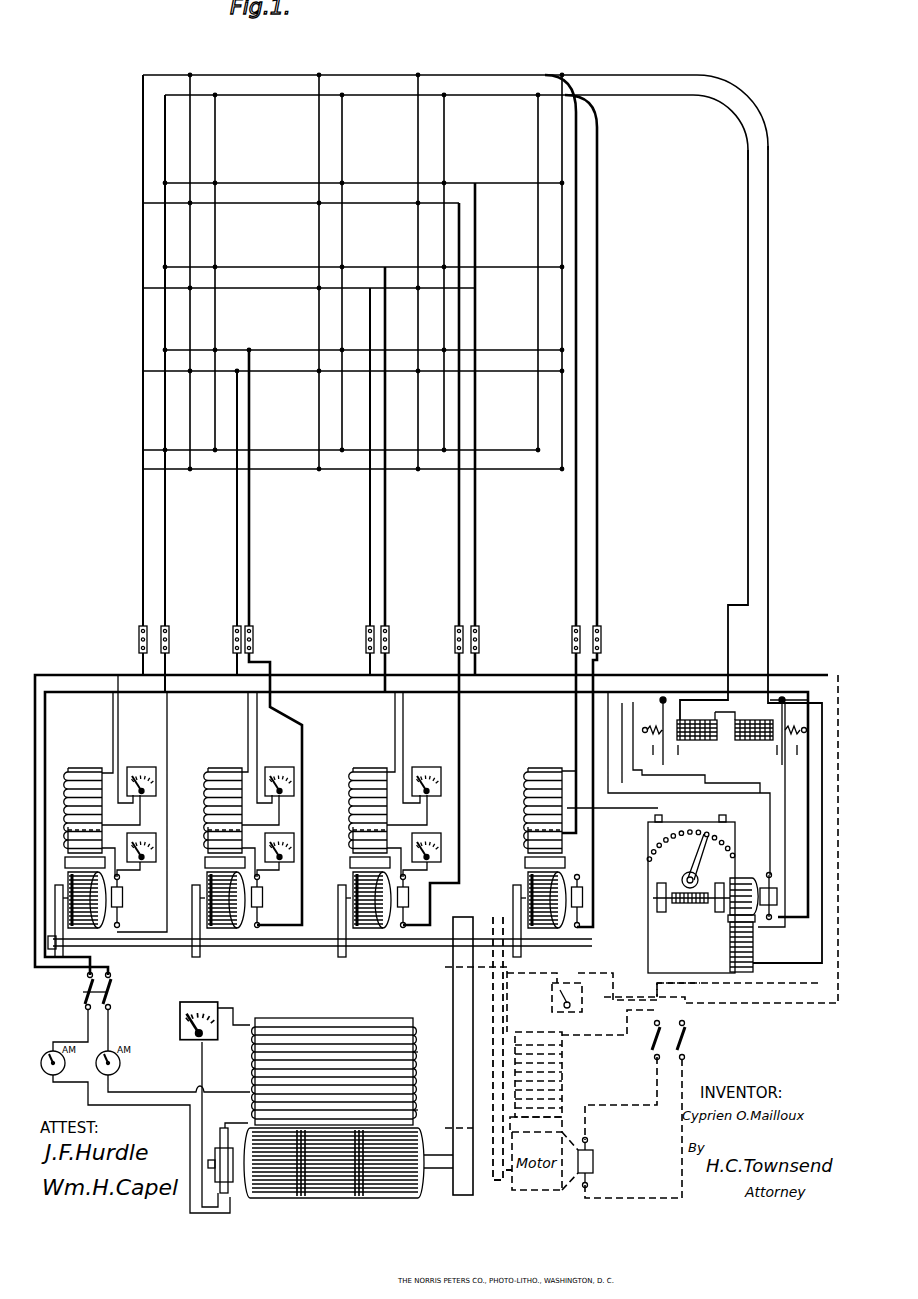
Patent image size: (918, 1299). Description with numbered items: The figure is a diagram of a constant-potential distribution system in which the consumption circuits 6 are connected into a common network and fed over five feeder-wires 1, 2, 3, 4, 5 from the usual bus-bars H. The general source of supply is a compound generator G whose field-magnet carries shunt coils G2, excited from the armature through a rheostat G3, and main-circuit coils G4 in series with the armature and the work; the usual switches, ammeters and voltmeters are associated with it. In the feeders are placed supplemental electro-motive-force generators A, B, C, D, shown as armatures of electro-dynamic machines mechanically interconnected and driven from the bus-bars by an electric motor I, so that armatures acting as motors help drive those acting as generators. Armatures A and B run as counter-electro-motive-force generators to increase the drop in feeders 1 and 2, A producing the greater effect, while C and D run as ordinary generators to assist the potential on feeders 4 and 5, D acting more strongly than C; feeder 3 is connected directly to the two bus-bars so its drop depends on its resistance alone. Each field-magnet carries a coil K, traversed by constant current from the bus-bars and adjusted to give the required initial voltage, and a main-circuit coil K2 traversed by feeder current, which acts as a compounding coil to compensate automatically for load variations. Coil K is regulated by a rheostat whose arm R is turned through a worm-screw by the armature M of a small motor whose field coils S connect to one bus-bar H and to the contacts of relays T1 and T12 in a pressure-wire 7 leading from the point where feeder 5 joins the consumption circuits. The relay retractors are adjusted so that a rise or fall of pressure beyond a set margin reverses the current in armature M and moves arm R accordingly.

The feeder-wire 1 is at (148, 383).
The feeder-wire 2 is at (267, 637).
The feeder-wire 3 is at (384, 479).
The feeder-wire 4 is at (447, 554).
The feeder-wire 5 is at (588, 519).
The consumption circuits 6 is at (455, 270).
The pressure-wire 7 is at (751, 554).
The bus-bars H is at (112, 668).
The field-magnet coil K is at (528, 805).
The main-circuit coil K2 is at (528, 848).
The supplemental electro-motive-force generator armature A is at (107, 921).
The supplemental electro-motive-force generator armature B is at (247, 921).
The supplemental electro-motive-force generator armature C is at (393, 921).
The supplemental electro-motive-force generator armature D is at (568, 921).
The relay T1 is at (771, 731).
The relay T12 is at (689, 731).
The rheostat-arm R is at (691, 894).
The motor armature M is at (745, 878).
The field-magnet coils S is at (750, 947).
The generator G is at (330, 1092).
The shunt field coils G2 is at (427, 1052).
The rheostat G3 is at (215, 1095).
The main-circuit coils G4 is at (427, 1105).
The electric motor I is at (572, 1082).